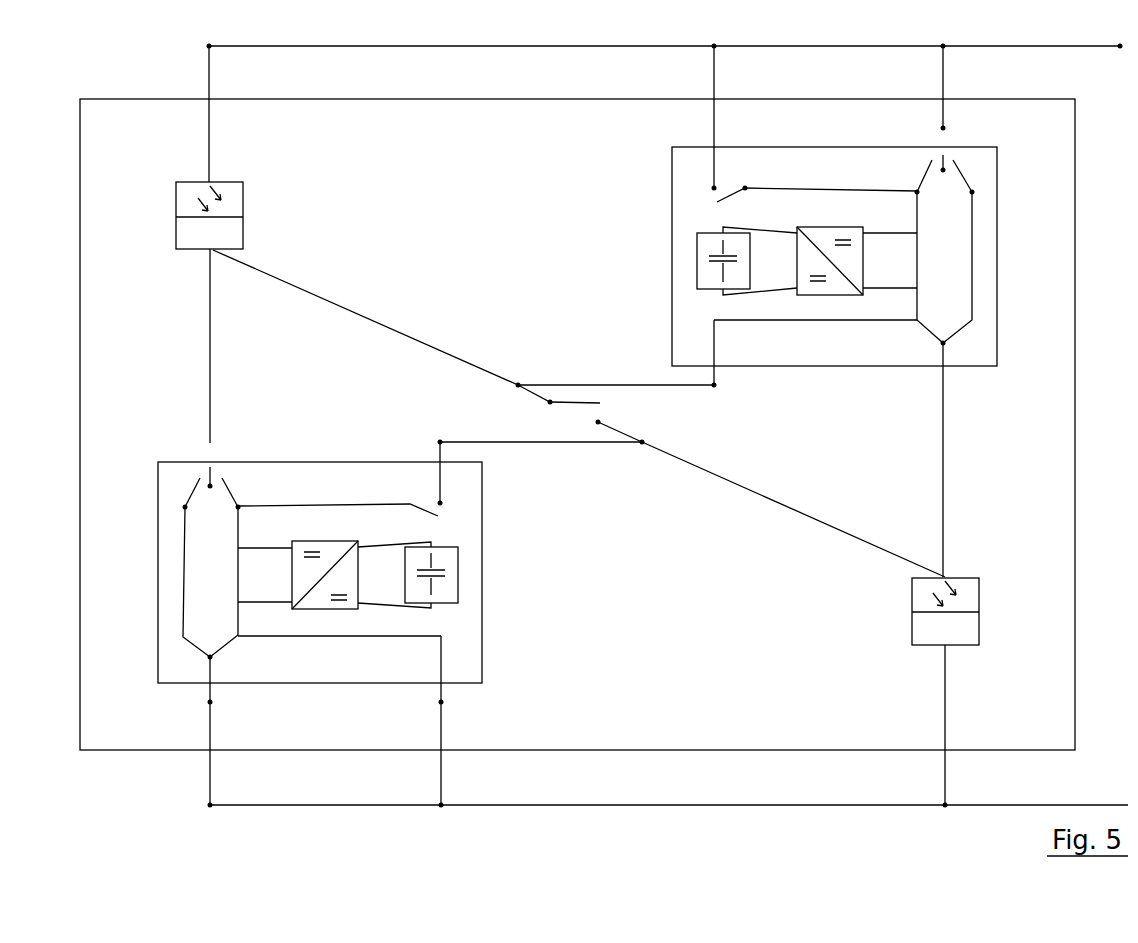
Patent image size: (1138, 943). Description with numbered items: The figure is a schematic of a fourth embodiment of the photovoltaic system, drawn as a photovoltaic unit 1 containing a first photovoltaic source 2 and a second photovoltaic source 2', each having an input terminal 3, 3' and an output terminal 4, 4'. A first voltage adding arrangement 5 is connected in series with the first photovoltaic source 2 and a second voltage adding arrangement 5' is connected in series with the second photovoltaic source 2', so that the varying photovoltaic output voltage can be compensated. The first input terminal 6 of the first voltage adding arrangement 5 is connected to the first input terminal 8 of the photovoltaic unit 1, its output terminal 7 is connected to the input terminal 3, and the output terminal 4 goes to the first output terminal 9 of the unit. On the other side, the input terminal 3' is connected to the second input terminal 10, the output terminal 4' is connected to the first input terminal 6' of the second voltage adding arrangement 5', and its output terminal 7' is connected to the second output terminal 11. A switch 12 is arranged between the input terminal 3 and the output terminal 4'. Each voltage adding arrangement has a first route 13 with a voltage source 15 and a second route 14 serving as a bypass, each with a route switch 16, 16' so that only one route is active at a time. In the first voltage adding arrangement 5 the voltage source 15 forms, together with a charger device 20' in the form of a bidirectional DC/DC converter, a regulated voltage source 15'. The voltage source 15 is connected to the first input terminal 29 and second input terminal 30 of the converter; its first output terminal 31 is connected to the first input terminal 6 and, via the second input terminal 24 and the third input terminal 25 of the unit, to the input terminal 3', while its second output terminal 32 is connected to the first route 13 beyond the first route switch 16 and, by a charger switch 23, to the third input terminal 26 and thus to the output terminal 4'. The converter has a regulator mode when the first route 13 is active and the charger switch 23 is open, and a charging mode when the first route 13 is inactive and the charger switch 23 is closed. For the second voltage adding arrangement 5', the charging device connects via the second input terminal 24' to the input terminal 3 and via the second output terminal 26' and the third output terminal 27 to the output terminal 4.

The photovoltaic unit 1 is at (117, 115).
The first photovoltaic source 2 is at (241, 215).
The second photovoltaic source 2' is at (838, 436).
The input terminal of the first photovoltaic source 3 is at (180, 346).
The input terminal of the second photovoltaic source 3' is at (916, 670).
The output terminal of the first photovoltaic source 4 is at (236, 114).
The output terminal of the second photovoltaic source 4' is at (938, 405).
The first voltage adding arrangement 5 is at (350, 572).
The second voltage adding arrangement 5' is at (800, 256).
The first input terminal of the first voltage adding arrangement 6 is at (239, 731).
The first input terminal of the second voltage adding arrangement 6' is at (828, 448).
The output terminal of the first voltage adding arrangement 7 is at (239, 437).
The output terminal of the second voltage adding arrangement 7' is at (916, 139).
The first input terminal of the photovoltaic unit 8 is at (212, 807).
The first output terminal of the photovoltaic unit 9 is at (210, 52).
The second input terminal of the photovoltaic unit 10 is at (948, 803).
The second output terminal of the photovoltaic unit 11 is at (943, 47).
The switch 12 is at (577, 403).
The first route 13 is at (232, 643).
The second route 14 is at (183, 577).
The voltage source 15 is at (465, 575).
The regulated voltage source 15' is at (424, 557).
The first route switch 16 is at (577, 335).
The route switch 16' is at (581, 334).
The charger device 20' is at (325, 557).
The charger switch 23 is at (422, 500).
The second input terminal of the first voltage adding arrangement 24 is at (475, 720).
The second input terminal of the second voltage adding arrangement 24' is at (642, 408).
The third input terminal of the photovoltaic unit 25 is at (443, 807).
The third input terminal of the first voltage adding arrangement 26 is at (520, 454).
The second output terminal of the second voltage adding arrangement 26' is at (780, 155).
The third output terminal of the photovoltaic unit 27 is at (718, 53).
The first input terminal of the bidirectional DC/DC converter 29 is at (358, 602).
The second input terminal of the bidirectional DC/DC converter 30 is at (360, 547).
The first output terminal of the bidirectional DC/DC converter 31 is at (292, 600).
The second output terminal of the bidirectional DC/DC converter 32 is at (292, 550).